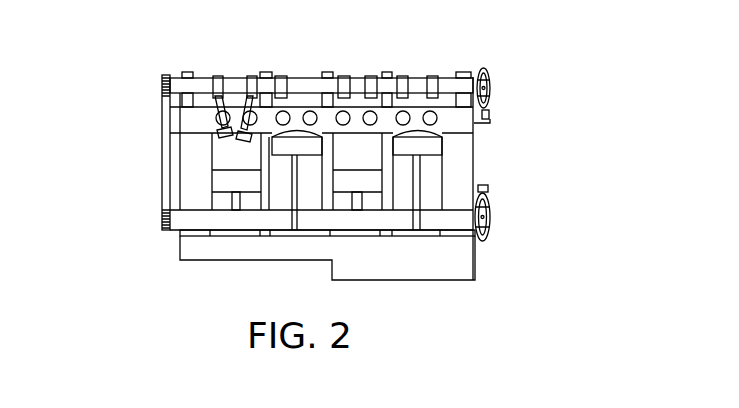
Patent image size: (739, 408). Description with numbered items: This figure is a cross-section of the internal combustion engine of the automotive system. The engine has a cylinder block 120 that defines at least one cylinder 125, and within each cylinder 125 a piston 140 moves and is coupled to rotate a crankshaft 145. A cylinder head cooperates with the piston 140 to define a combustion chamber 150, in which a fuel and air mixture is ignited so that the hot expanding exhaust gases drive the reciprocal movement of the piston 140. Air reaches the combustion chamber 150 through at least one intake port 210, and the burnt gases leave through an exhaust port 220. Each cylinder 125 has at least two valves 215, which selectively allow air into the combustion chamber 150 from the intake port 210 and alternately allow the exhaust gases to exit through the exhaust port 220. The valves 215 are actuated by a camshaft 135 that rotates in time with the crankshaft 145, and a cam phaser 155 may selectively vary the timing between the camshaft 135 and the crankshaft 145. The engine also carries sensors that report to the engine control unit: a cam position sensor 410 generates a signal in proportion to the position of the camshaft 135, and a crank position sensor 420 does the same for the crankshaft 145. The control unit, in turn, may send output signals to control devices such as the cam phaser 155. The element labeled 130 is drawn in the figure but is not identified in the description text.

The cylinder block 120 is at (180, 172).
The cylinder 125 is at (333, 156).
The support band 130 is at (178, 127).
The camshaft 135 is at (233, 80).
The piston 140 is at (358, 182).
The crankshaft 145 is at (207, 221).
The combustion chamber 150 is at (420, 133).
The cam phaser 155 is at (160, 84).
The intake port 210 is at (347, 112).
The valves 215 is at (237, 133).
The exhaust port 220 is at (303, 110).
The cam position sensor 410 is at (489, 122).
The crank position sensor 420 is at (488, 188).